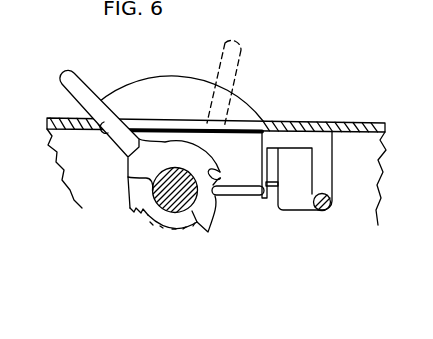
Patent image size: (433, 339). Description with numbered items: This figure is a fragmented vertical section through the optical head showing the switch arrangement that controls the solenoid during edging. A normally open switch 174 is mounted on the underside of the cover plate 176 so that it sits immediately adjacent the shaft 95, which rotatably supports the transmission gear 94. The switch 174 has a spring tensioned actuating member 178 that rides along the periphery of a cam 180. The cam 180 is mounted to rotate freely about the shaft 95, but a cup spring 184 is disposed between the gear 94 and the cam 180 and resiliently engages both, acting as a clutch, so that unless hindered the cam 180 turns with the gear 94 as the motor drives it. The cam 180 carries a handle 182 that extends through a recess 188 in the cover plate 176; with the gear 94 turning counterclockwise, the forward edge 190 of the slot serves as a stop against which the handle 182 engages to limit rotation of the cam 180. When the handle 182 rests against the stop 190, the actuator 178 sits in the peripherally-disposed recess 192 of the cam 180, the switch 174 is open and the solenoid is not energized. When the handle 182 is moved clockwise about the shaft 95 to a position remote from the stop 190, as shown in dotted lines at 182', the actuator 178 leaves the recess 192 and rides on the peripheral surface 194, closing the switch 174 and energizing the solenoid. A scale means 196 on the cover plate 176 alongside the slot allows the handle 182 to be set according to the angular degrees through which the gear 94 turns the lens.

The transmission gear 94 is at (162, 237).
The shaft 95 is at (126, 181).
The normally open switch 174 is at (317, 140).
The cover plate 176 is at (374, 121).
The actuating member 178 is at (238, 198).
The cam 180 is at (207, 226).
The handle 182 is at (88, 100).
The handle in moved position 182' is at (251, 76).
The cup spring 184 is at (133, 221).
The recess 188 is at (243, 123).
The forward edge 190 is at (107, 134).
The peripherally-disposed recess 192 is at (212, 164).
The peripheral surface 194 is at (187, 121).
The scale means 196 is at (167, 74).